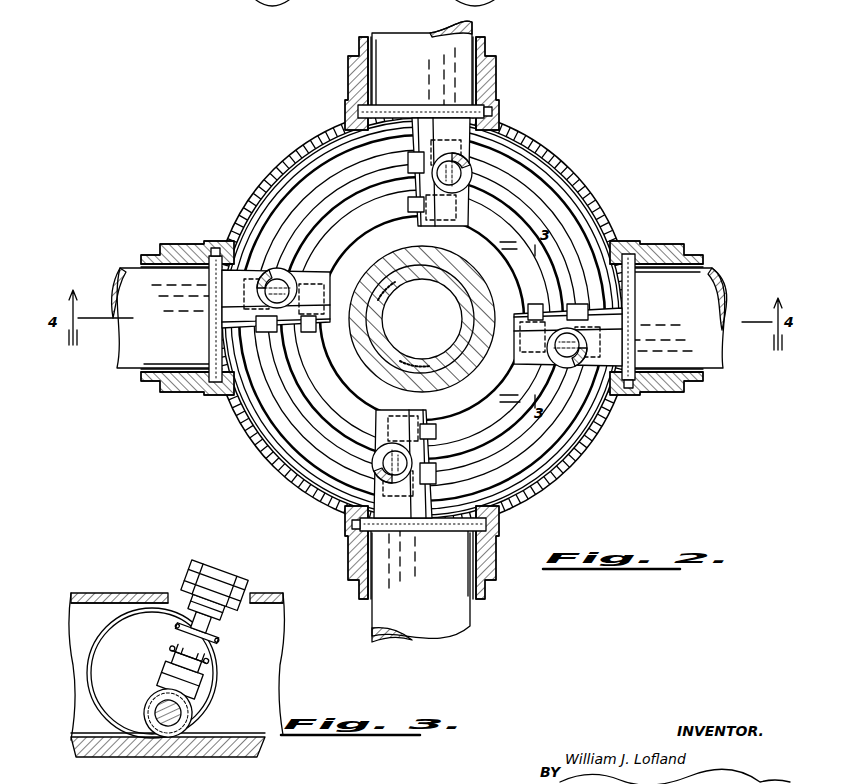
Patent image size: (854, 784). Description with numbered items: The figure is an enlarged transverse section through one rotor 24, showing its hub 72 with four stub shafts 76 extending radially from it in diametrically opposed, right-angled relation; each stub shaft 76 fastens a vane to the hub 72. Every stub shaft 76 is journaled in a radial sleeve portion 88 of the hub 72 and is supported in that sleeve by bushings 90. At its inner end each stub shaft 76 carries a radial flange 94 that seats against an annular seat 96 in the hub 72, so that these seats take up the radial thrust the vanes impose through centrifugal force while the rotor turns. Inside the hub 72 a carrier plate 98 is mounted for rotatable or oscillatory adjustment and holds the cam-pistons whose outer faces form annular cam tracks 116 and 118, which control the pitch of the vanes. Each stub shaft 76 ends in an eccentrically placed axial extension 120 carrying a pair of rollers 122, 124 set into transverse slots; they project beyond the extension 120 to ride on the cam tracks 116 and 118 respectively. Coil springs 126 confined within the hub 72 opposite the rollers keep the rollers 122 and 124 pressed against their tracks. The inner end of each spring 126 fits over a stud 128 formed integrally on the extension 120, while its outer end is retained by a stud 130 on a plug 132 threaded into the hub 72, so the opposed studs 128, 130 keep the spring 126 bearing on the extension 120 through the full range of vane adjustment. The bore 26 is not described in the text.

In FIG. 2, the rotor 24 is at (220, 210).
In FIG. 2, the central bore 26 is at (392, 302).
In FIG. 2, the hub 72 is at (565, 178).
In FIG. 3, the hub 72 is at (86, 593).
In FIG. 2, the stub shaft 76 is at (396, 44).
In FIG. 3, the stub shaft 76 is at (98, 668).
In FIG. 2, the radial sleeve portion 88 is at (495, 70).
In FIG. 2, the bushing 90 is at (486, 46).
In FIG. 2, the radial flange 94 is at (482, 112).
In FIG. 2, the annular seat 96 is at (494, 108).
In FIG. 2, the carrier plate 98 is at (560, 206).
In FIG. 2, the cam track 116 is at (325, 359).
In FIG. 2, the cam track 118 is at (293, 394).
In FIG. 2, the axial extension 120 is at (462, 140).
In FIG. 3, the axial extension 120 is at (205, 690).
In FIG. 2, the roller 122 is at (408, 205).
In FIG. 3, the roller 122 is at (185, 714).
In FIG. 2, the roller 124 is at (410, 160).
In FIG. 3, the roller 124 is at (220, 636).
In FIG. 2, the coil spring 126 is at (590, 360).
In FIG. 2, the stud 128 is at (470, 180).
In FIG. 3, the stud 128 is at (180, 656).
In FIG. 3, the stud 130 is at (186, 600).
In FIG. 3, the plug 132 is at (196, 575).